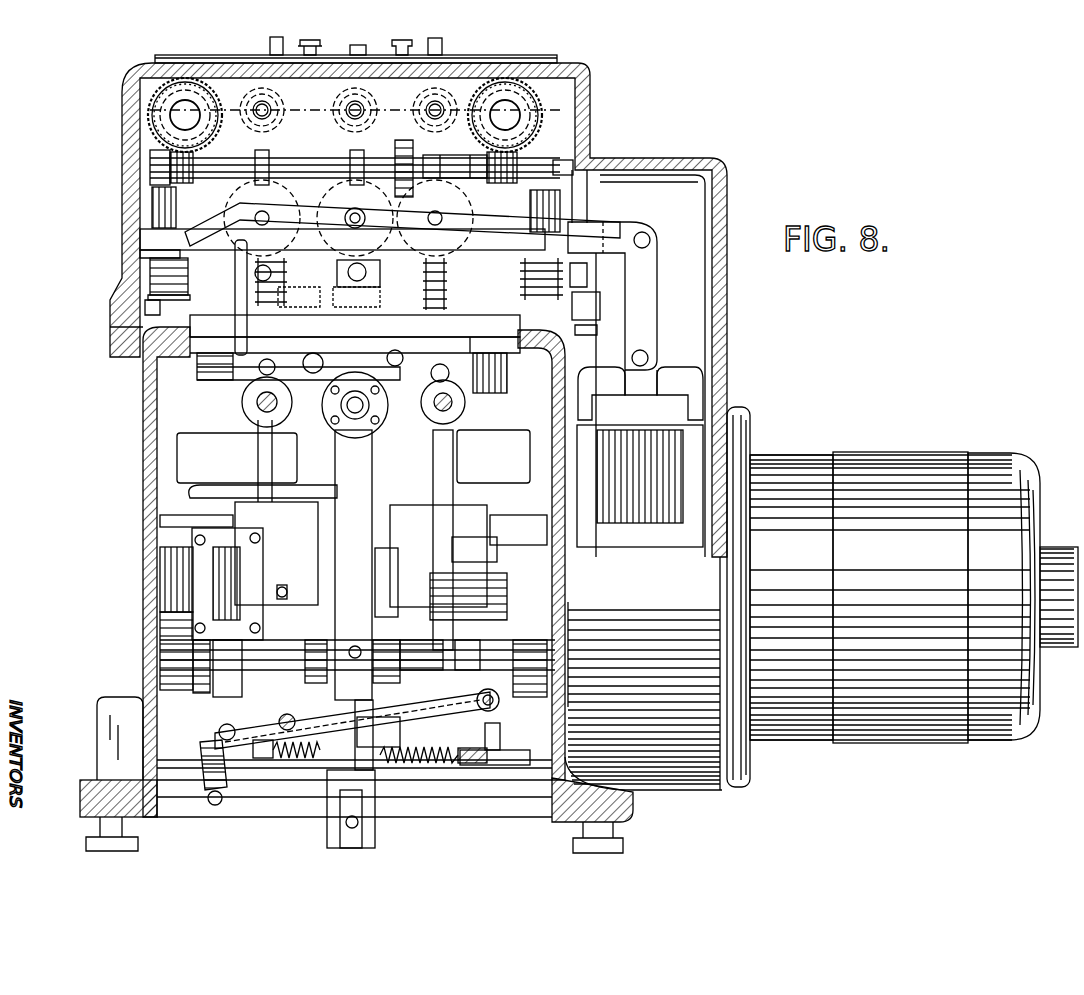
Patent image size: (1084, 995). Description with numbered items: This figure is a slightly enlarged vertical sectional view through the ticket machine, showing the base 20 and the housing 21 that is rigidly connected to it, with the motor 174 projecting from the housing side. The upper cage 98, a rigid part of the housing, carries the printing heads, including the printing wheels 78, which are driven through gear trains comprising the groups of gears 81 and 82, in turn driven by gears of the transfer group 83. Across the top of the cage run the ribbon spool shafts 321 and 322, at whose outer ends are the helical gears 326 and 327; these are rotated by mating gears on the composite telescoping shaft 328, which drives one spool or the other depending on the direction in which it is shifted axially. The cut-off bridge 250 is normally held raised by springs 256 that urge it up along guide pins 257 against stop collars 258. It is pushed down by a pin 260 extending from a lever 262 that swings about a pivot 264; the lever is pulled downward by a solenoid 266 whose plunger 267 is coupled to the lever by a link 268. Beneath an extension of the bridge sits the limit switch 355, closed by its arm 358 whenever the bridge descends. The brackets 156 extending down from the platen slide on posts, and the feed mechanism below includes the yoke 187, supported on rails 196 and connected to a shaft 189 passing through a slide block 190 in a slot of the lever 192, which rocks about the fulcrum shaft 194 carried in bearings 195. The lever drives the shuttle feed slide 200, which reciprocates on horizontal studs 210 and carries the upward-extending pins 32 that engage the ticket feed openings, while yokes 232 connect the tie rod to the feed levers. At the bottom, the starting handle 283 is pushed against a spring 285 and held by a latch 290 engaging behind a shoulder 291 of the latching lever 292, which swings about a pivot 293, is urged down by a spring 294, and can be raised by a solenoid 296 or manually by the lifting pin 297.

The base 20 is at (88, 792).
The housing 21 is at (145, 657).
The pins 32 is at (445, 325).
The printing wheels 78 is at (452, 282).
The group of gears 81 is at (466, 246).
The group of gears 82 is at (430, 116).
The transfer group 83 is at (480, 62).
The upper cage 98 is at (120, 166).
The brackets 156 is at (178, 428).
The motor 174 is at (886, 456).
The yoke 187 is at (499, 538).
The shaft 189 is at (285, 600).
The slide block 190 is at (388, 618).
The lever 192 is at (378, 582).
The fulcrum shaft 194 is at (465, 645).
The bearings 195 is at (170, 637).
The rails 196 is at (205, 522).
The shuttle feed slide 200 is at (270, 495).
The studs 210 is at (262, 403).
The yokes 232 is at (376, 830).
The cut-off bridge 250 is at (143, 237).
The springs 256 is at (152, 284).
The guide pins 257 is at (148, 300).
The stop collars 258 is at (160, 212).
The pin 260 is at (340, 206).
The lever 262 is at (620, 226).
The pivot 264 is at (150, 266).
The solenoid 266 is at (645, 530).
The plunger 267 is at (648, 380).
The link 268 is at (648, 347).
The handle 283 is at (460, 765).
The spring 285 is at (302, 762).
The latch 290 is at (385, 762).
The shoulder 291 is at (372, 712).
The lever 292 is at (360, 748).
The pivot 293 is at (483, 712).
The spring 294 is at (205, 792).
The solenoid 296 is at (215, 580).
The lifting pin 297 is at (295, 722).
The shaft 321 is at (183, 118).
The shaft 322 is at (510, 120).
The helical gear 326 is at (152, 108).
The helical gear 327 is at (535, 103).
The composite telescoping shaft 328 is at (308, 162).
The limit switch 355 is at (602, 305).
The arm 358 is at (595, 266).